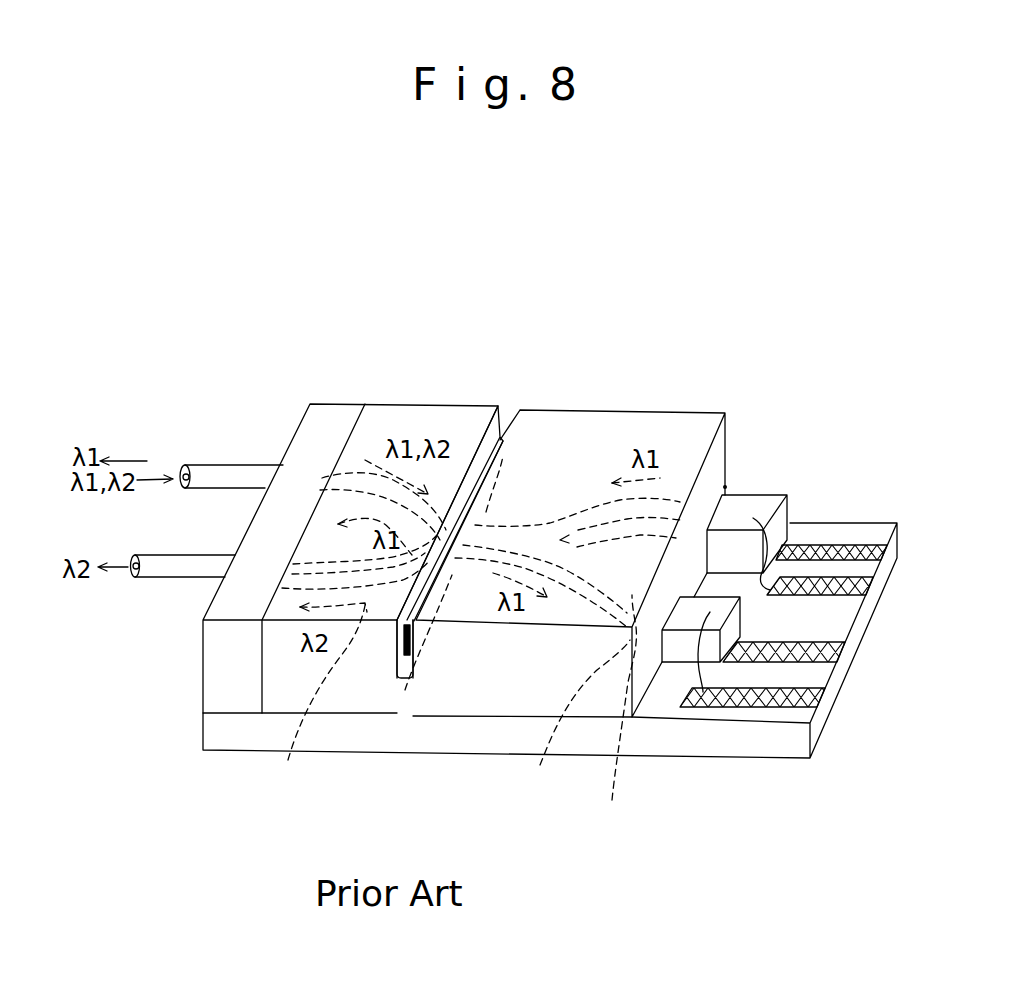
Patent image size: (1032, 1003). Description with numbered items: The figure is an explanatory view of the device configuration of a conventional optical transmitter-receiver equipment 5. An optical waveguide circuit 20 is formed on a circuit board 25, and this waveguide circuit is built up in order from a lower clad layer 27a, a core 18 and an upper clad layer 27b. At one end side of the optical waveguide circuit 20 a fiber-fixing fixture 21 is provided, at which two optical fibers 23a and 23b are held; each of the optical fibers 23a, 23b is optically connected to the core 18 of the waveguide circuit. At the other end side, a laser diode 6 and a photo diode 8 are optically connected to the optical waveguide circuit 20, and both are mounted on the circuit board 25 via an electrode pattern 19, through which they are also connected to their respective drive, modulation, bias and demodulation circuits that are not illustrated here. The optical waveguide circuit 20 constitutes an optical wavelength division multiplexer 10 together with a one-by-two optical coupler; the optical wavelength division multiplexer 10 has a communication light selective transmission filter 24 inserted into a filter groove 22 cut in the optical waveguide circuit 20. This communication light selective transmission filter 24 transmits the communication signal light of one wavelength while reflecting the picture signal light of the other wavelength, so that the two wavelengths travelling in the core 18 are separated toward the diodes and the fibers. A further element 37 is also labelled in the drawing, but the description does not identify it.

The optical transmitter-receiver equipment 5 is at (755, 374).
The laser diode 6 is at (553, 507).
The photo diode 8 is at (678, 655).
The optical wavelength division multiplexer 10 is at (350, 559).
The core 18 is at (354, 667).
The electrode pattern 19 is at (865, 550).
The optical waveguide circuit 20 is at (560, 430).
The fiber-fixing fixture 21 is at (342, 423).
The filter groove 22 is at (400, 690).
The optical fiber 23a is at (242, 472).
The optical fiber 23b is at (178, 563).
The communication light selective transmission filter 24 is at (478, 456).
The circuit board 25 is at (833, 697).
The lower clad layer 27a is at (550, 696).
The upper clad layer 27b is at (546, 673).
The waveguide coupler 37 is at (392, 423).